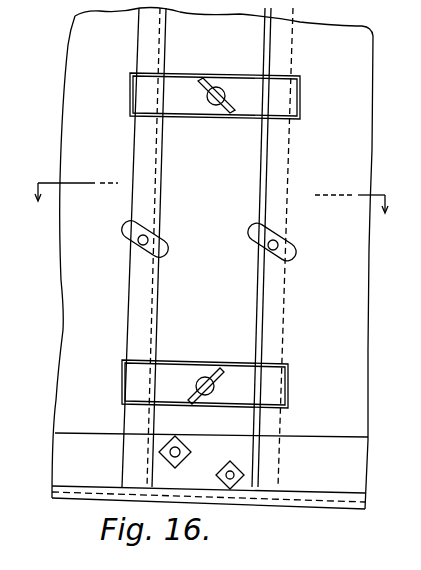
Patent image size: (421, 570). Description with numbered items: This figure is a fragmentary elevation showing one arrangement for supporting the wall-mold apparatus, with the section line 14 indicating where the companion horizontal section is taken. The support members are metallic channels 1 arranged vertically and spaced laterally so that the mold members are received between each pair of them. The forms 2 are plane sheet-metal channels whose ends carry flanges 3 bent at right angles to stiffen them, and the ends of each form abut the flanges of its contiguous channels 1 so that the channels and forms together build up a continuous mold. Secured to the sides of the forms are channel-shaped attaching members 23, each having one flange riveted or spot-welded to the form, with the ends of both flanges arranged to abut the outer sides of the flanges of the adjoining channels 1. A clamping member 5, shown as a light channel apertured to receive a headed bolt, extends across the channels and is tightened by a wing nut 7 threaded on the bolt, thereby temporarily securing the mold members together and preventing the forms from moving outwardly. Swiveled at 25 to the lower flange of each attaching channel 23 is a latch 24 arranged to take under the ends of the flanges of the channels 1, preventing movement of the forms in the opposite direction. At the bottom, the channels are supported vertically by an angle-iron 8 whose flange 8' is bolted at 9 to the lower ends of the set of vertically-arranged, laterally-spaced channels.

The channels 1 is at (152, 334).
The forms 2 is at (80, 390).
The flanges 3 is at (342, 500).
The clamp member 5 is at (283, 117).
The wing nut 7 is at (214, 84).
The angle-iron 8 is at (332, 513).
The flange 8' is at (83, 509).
The bolts 9 is at (223, 463).
The section line 14— 14 is at (219, 187).
The channel-shaped attaching members 23 is at (283, 178).
The latch 24 is at (126, 237).
The swivel 25 is at (137, 248).